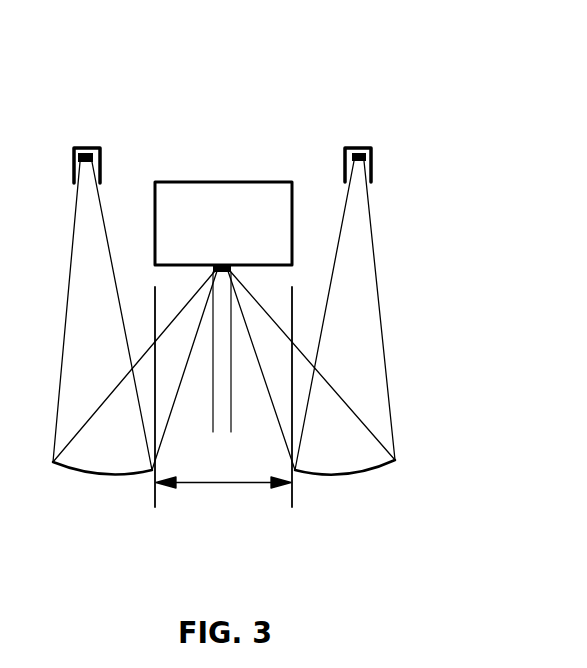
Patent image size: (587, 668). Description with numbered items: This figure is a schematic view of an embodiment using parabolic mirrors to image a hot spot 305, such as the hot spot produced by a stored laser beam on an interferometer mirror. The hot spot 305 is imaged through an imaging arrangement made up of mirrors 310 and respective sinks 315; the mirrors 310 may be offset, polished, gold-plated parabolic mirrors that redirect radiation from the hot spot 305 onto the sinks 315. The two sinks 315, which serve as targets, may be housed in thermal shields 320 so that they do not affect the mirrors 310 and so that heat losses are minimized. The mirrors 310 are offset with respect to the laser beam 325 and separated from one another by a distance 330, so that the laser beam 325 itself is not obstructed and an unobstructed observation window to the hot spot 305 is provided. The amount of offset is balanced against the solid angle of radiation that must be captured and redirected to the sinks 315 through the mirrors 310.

The hot spot 305 is at (217, 264).
The mirrors 310 is at (90, 472).
The sinks 315 is at (88, 148).
The thermal shields 320 is at (101, 163).
The laser beam 325 is at (229, 395).
The distance 330 is at (210, 483).